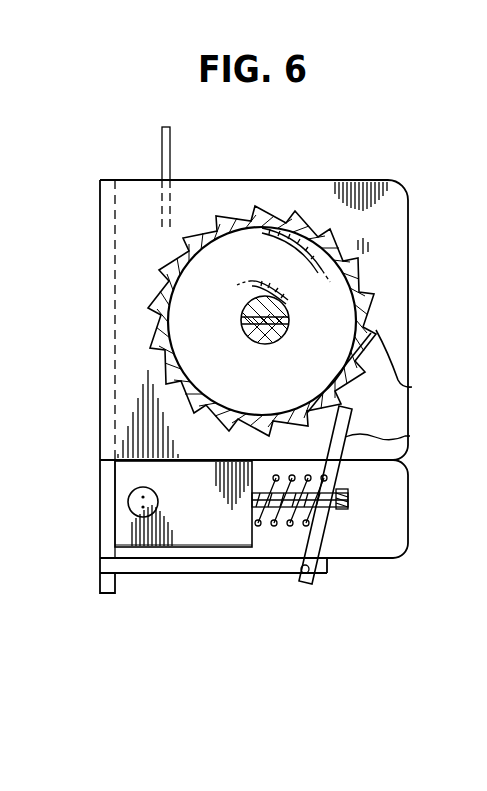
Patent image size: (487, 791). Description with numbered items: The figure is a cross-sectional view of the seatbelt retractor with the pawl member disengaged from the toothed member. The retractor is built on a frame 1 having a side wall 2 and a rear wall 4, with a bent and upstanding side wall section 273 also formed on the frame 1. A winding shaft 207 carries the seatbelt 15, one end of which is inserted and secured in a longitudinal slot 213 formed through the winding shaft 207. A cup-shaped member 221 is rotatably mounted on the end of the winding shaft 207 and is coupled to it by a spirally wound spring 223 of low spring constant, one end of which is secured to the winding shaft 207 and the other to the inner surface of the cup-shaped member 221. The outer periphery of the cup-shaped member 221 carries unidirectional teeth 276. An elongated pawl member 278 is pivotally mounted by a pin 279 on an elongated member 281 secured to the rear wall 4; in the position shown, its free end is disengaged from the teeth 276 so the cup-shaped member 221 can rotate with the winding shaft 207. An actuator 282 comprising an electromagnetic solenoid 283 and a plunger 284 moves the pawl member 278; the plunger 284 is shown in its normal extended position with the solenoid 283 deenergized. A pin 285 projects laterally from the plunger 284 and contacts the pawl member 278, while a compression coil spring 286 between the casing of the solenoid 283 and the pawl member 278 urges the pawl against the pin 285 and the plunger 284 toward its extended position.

The frame 1 is at (98, 350).
The side wall 2 is at (405, 187).
The rear wall 4 is at (100, 502).
The seatbelt 15 is at (171, 142).
The winding shaft 207 is at (258, 346).
The longitudinal slot 213 is at (282, 327).
The cup-shaped member 221 is at (370, 218).
The spirally wound spring 223 is at (296, 241).
The upstanding side wall section 273 is at (402, 508).
The unidirectional teeth 276 is at (404, 386).
The elongated pawl member 278 is at (410, 436).
The pin 279 is at (308, 576).
The elongated member 281 is at (231, 575).
The actuator 282 is at (197, 532).
The electromagnetic solenoid 283 is at (145, 518).
The plunger 284 is at (326, 504).
The pin 285 is at (347, 494).
The compression coil spring 286 is at (271, 527).